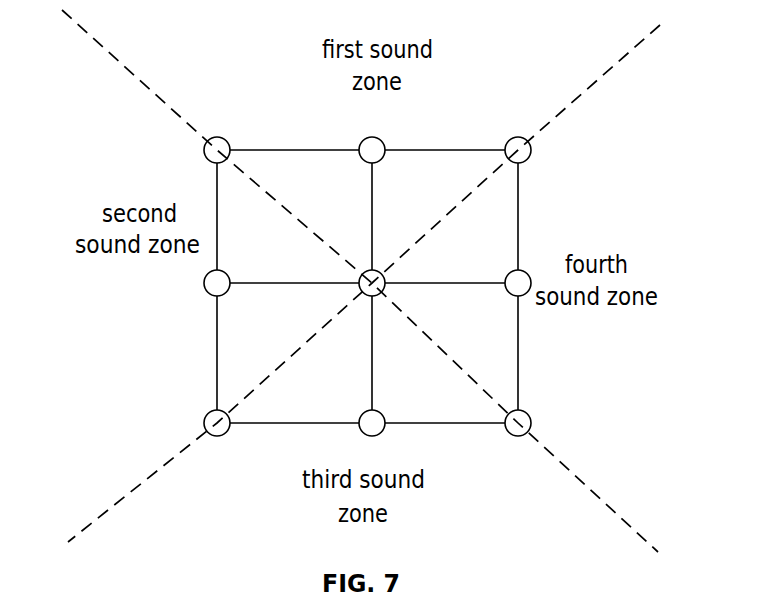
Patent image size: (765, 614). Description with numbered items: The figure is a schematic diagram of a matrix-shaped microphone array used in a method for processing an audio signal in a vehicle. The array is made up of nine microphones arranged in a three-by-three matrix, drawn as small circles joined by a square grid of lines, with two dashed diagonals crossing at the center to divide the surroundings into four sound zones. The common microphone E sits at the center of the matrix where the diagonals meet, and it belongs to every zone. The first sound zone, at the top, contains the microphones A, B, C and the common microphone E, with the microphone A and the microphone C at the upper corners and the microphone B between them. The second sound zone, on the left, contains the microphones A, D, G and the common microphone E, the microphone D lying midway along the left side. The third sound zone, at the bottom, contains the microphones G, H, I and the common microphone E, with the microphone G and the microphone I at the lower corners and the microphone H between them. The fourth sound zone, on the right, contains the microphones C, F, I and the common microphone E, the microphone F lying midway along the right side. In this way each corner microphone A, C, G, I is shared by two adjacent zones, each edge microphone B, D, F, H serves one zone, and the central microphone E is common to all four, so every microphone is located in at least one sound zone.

The microphone A is at (220, 128).
The microphone B is at (372, 127).
The microphone C is at (518, 127).
The microphone D is at (199, 284).
The common microphone E is at (355, 264).
The microphone F is at (528, 273).
The microphone G is at (217, 439).
The microphone H is at (368, 438).
The microphone I is at (517, 439).